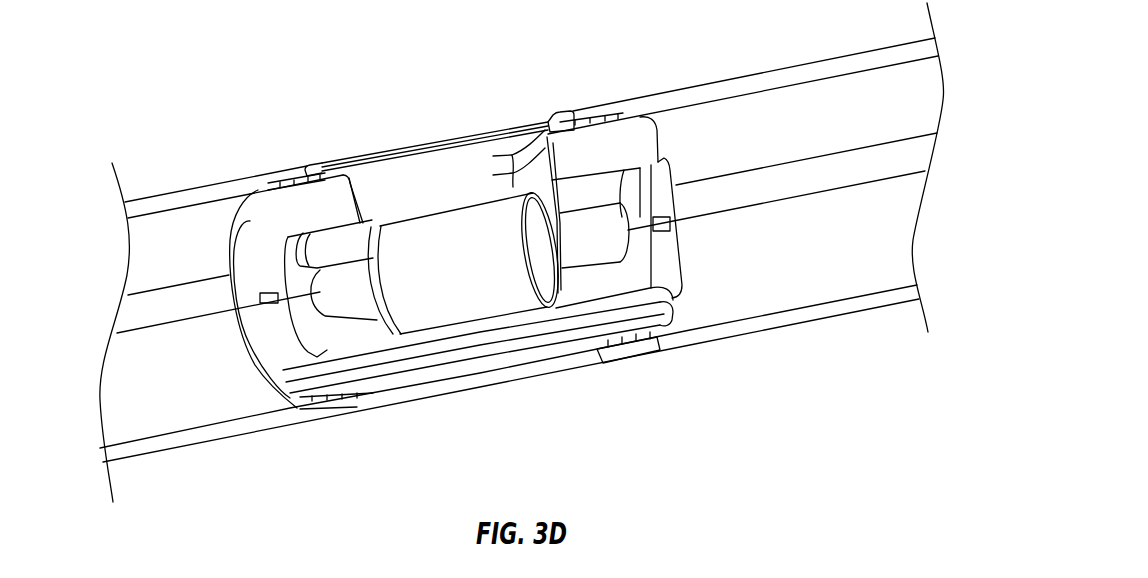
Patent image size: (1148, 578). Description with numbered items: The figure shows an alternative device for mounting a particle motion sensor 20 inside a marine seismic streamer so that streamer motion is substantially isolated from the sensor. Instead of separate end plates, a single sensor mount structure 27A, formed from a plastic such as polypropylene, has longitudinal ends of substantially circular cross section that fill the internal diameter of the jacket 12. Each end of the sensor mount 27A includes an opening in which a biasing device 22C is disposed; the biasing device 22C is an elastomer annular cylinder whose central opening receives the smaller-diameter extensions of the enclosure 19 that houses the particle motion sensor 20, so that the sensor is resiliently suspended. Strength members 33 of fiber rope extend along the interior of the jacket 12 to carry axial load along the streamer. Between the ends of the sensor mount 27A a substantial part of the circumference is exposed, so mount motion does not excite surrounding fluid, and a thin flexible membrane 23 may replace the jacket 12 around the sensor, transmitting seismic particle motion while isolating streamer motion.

The jacket 12 is at (157, 455).
The membrane 23 is at (432, 145).
The strength members 33 is at (150, 323).
The sensor mount structure 27A is at (303, 390).
The enclosure 19 is at (485, 317).
The particle motion sensor 20 is at (470, 300).
The biasing device 22C is at (608, 287).